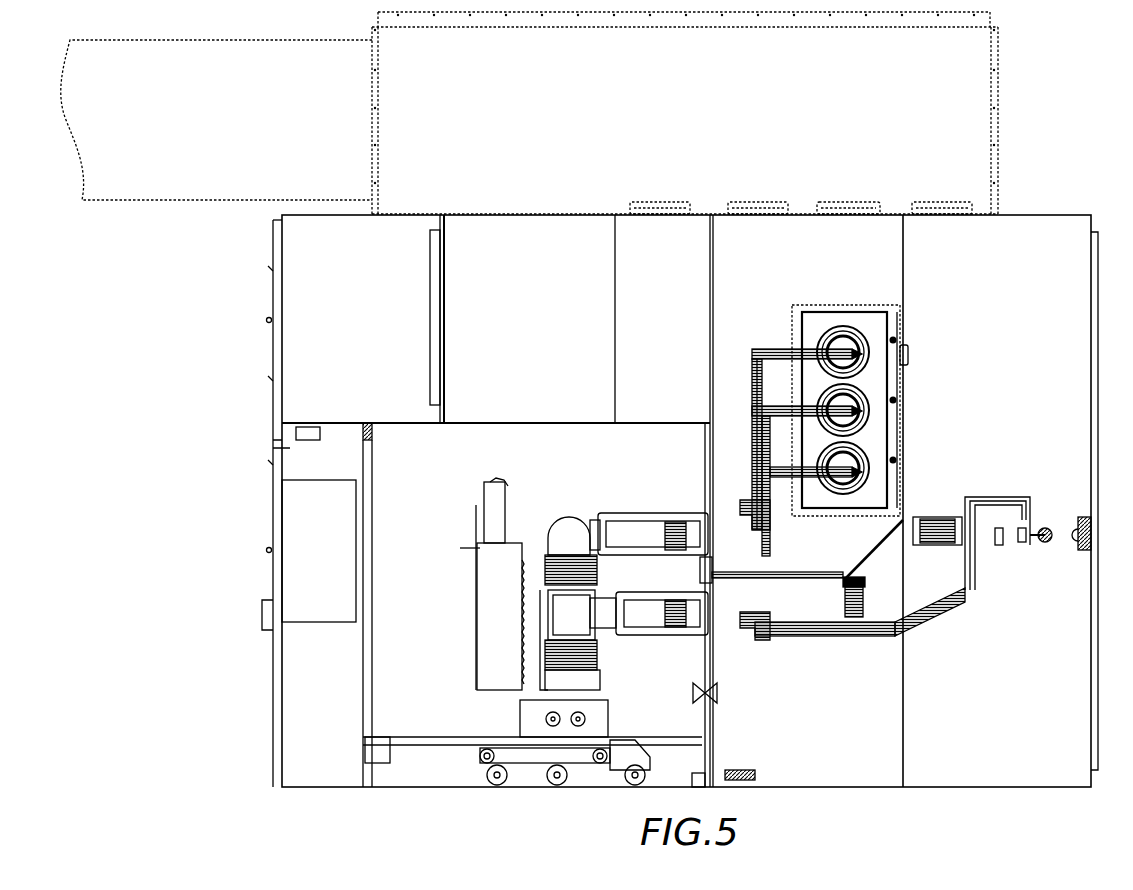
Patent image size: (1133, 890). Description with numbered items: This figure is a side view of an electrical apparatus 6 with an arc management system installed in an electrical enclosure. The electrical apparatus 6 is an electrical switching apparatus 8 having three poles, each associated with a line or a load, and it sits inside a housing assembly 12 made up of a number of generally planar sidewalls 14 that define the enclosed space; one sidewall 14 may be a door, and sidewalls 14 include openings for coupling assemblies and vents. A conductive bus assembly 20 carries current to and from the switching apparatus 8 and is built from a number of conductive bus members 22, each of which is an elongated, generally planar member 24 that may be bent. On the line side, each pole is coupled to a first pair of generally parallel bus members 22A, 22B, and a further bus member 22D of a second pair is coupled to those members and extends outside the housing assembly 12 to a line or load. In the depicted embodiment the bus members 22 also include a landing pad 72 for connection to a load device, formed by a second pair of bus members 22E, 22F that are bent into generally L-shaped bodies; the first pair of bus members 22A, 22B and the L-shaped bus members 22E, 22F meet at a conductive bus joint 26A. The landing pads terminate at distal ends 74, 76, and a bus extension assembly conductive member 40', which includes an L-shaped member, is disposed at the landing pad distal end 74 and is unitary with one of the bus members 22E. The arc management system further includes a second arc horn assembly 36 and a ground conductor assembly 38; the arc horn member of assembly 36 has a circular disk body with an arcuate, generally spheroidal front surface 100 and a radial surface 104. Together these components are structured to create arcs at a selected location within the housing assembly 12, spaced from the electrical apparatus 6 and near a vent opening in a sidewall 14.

The electrical apparatus 6 is at (436, 595).
The electrical switching apparatus 8 is at (720, 322).
The housing assembly 12 is at (820, 322).
The sidewall 14 is at (903, 268).
The conductive bus assembly 20 is at (868, 500).
The conductive bus member 22 is at (750, 385).
The bus member 22A is at (748, 460).
The bus member 22B is at (763, 505).
The bus member 22D is at (845, 478).
The bus member 22E is at (968, 503).
The bus member 22F is at (1000, 508).
The planar member 24 is at (752, 394).
The conductive bus joint 26A is at (995, 478).
The second arc horn assembly 36 is at (1085, 550).
The ground conductor assembly 38 is at (1078, 612).
The conductive member 40' is at (1065, 405).
The landing pad 72 is at (1035, 545).
The distal end 74 is at (998, 546).
The distal end 76 is at (1022, 542).
The front surface 100 is at (1050, 530).
The radial surface 104 is at (1042, 530).